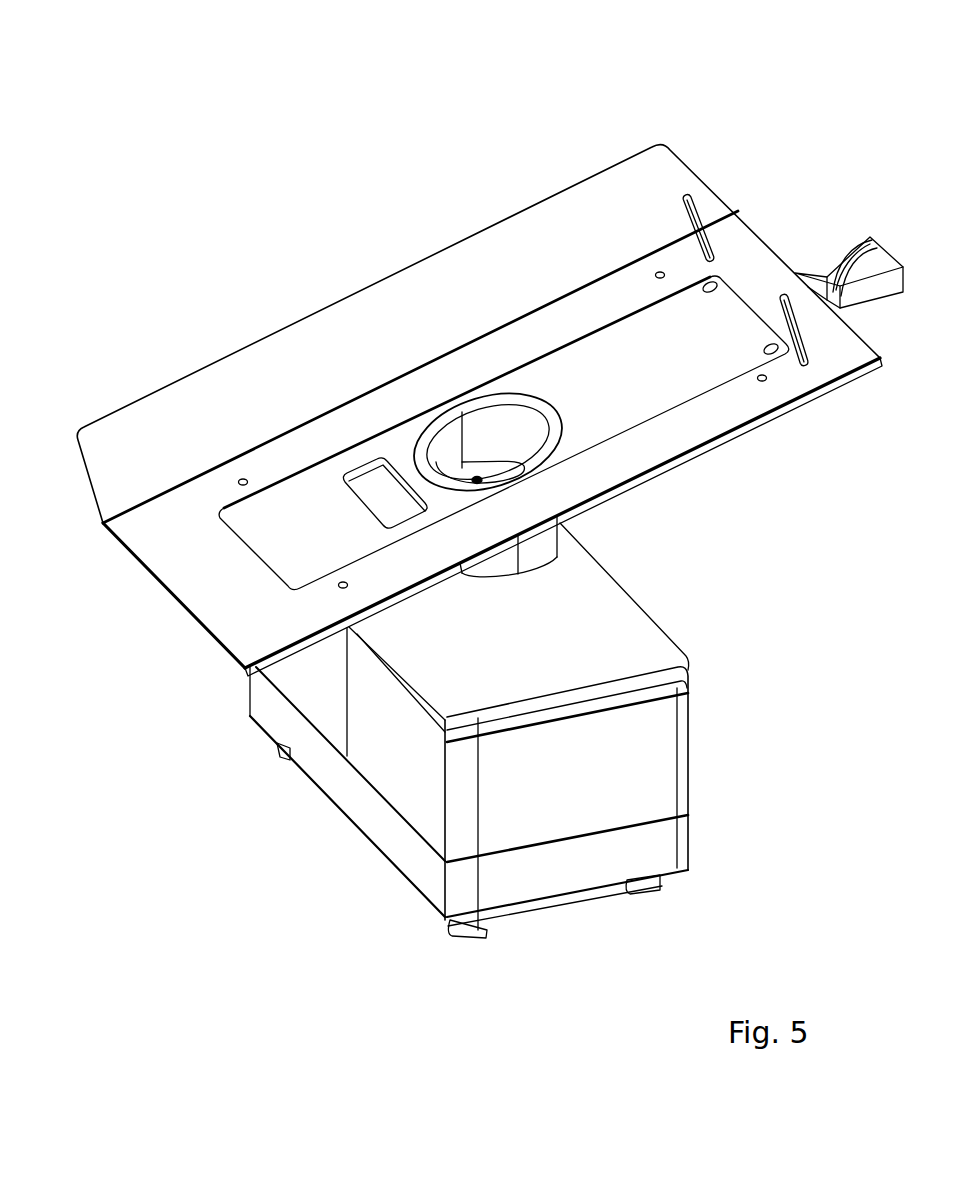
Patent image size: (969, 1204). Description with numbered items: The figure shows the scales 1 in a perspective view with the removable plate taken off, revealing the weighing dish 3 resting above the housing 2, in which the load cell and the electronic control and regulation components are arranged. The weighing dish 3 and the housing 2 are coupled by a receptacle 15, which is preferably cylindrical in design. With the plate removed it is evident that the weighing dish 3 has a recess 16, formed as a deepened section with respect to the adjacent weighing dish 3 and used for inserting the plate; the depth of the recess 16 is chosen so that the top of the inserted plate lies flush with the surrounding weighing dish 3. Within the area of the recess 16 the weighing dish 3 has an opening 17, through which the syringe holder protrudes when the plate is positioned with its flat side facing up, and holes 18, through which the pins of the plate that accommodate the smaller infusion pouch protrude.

The scales 1 is at (268, 851).
The housing 2 is at (620, 745).
The weighing dish 3 is at (220, 572).
The receptacle 15 is at (486, 452).
The recess 16 is at (607, 358).
The opening 17 is at (380, 493).
The holes 18 is at (716, 274).